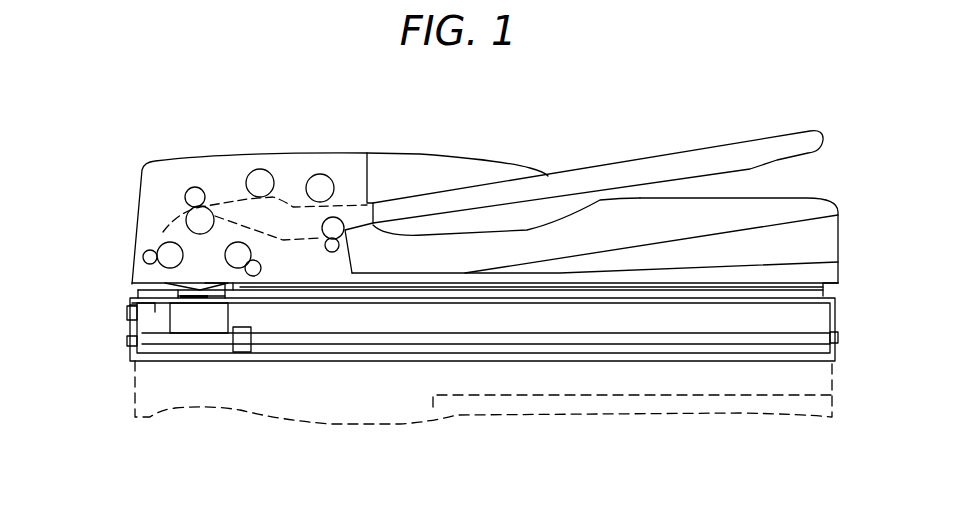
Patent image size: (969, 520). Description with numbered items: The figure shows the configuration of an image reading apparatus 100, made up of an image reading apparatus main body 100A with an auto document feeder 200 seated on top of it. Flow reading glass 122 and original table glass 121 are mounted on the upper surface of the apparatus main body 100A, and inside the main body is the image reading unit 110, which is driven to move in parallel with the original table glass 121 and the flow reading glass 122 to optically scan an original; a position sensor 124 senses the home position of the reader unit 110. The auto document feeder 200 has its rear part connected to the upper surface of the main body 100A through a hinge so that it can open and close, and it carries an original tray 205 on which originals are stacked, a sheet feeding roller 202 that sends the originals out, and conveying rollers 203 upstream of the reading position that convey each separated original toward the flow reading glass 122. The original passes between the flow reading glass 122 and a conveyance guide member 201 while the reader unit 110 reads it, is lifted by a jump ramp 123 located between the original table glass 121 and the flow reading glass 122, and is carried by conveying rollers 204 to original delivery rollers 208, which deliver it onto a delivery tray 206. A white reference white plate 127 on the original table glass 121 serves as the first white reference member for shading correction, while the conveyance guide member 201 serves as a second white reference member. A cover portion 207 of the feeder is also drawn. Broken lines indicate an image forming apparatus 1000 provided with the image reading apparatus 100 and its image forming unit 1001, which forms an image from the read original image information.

The image reading apparatus 100 is at (757, 97).
The image reading apparatus main body 100A is at (163, 361).
The image reading unit 110 is at (200, 330).
The original table glass 121 is at (488, 293).
The flow reading glass 122 is at (136, 307).
The jump ramp 123 is at (222, 289).
The position sensor 124 is at (240, 352).
The white reference white plate 127 is at (228, 300).
The auto document feeder 200 is at (222, 152).
The conveyance guide member 201 is at (160, 278).
The sheet feeding roller 202 is at (323, 175).
The conveying rollers 203 is at (168, 242).
The conveying rollers 204 is at (255, 249).
The original tray 205 is at (582, 167).
The delivery tray 206 is at (662, 247).
The feeder cover 207 is at (777, 282).
The original delivery rollers 208 is at (347, 232).
The image forming apparatus 1000 is at (150, 412).
The image forming unit 1001 is at (433, 406).